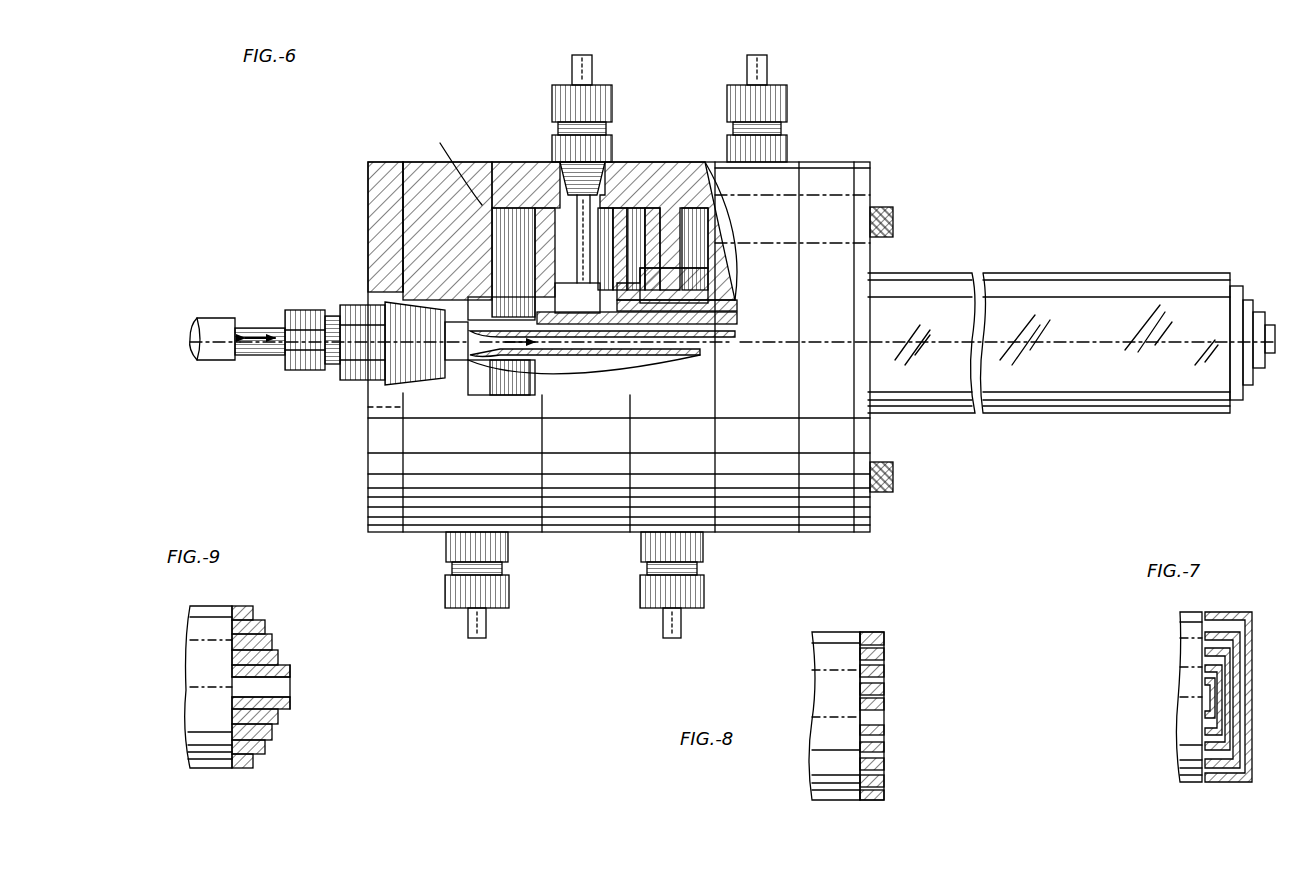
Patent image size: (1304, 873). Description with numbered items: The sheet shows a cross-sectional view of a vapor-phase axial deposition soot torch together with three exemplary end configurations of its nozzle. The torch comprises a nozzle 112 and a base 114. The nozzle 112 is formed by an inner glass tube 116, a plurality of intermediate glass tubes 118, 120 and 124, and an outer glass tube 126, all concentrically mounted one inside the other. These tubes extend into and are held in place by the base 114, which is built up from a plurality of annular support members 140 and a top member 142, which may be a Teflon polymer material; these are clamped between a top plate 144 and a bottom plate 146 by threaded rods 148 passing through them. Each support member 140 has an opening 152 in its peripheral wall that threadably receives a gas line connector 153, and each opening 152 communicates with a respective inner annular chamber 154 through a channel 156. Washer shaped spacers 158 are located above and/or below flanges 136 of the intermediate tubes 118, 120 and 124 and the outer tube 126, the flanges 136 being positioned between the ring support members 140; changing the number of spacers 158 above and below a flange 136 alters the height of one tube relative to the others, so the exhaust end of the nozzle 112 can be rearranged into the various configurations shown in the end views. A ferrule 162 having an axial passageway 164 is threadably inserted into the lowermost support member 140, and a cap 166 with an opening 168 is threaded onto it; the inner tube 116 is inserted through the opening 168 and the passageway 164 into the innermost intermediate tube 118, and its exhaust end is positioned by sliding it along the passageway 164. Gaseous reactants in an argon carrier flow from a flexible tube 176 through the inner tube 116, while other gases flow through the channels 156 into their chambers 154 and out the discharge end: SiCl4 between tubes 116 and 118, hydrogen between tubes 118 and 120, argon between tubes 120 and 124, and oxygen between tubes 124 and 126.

In FIG. 6, the nozzle 112 is at (1055, 270).
In FIG. 6, the base 114 is at (418, 158).
In FIG. 6, the inner glass tube 116 is at (268, 352).
In FIG. 9, the inner glass tube 116 is at (290, 668).
In FIG. 8, the inner glass tube 116 is at (884, 702).
In FIG. 7, the inner glass tube 116 is at (1215, 682).
In FIG. 6, the intermediate glass tube 118 is at (740, 322).
In FIG. 9, the intermediate glass tube 118 is at (280, 655).
In FIG. 8, the intermediate glass tube 118 is at (884, 688).
In FIG. 7, the intermediate glass tube 118 is at (1222, 668).
In FIG. 6, the intermediate glass tube 120 is at (740, 307).
In FIG. 9, the intermediate glass tube 120 is at (272, 638).
In FIG. 8, the intermediate glass tube 120 is at (884, 670).
In FIG. 7, the intermediate glass tube 120 is at (1228, 652).
In FIG. 6, the intermediate glass tube 124 is at (725, 300).
In FIG. 9, the intermediate glass tube 124 is at (262, 621).
In FIG. 8, the intermediate glass tube 124 is at (884, 652).
In FIG. 7, the intermediate glass tube 124 is at (1238, 636).
In FIG. 6, the outer glass tube 126 is at (1175, 282).
In FIG. 9, the outer glass tube 126 is at (245, 606).
In FIG. 8, the outer glass tube 126 is at (874, 612).
In FIG. 7, the outer glass tube 126 is at (1222, 612).
In FIG. 6, the flange 136 is at (542, 225).
In FIG. 6, the annular support member 140 is at (556, 516).
In FIG. 6, the top member 142 is at (800, 162).
In FIG. 6, the top plate 144 is at (860, 273).
In FIG. 6, the bottom plate 146 is at (368, 210).
In FIG. 6, the threaded rod 148 is at (885, 205).
In FIG. 6, the opening 152 is at (565, 185).
In FIG. 6, the gas line connector 153 is at (552, 85).
In FIG. 6, the inner annular chamber 154 is at (470, 212).
In FIG. 6, the channel 156 is at (588, 250).
In FIG. 6, the washer shaped spacer 158 is at (740, 184).
In FIG. 6, the ferrule 162 is at (432, 378).
In FIG. 6, the axial passageway 164 is at (458, 362).
In FIG. 6, the cap 166 is at (312, 372).
In FIG. 6, the opening 168 is at (290, 310).
In FIG. 6, the flexible tube 176 is at (217, 318).